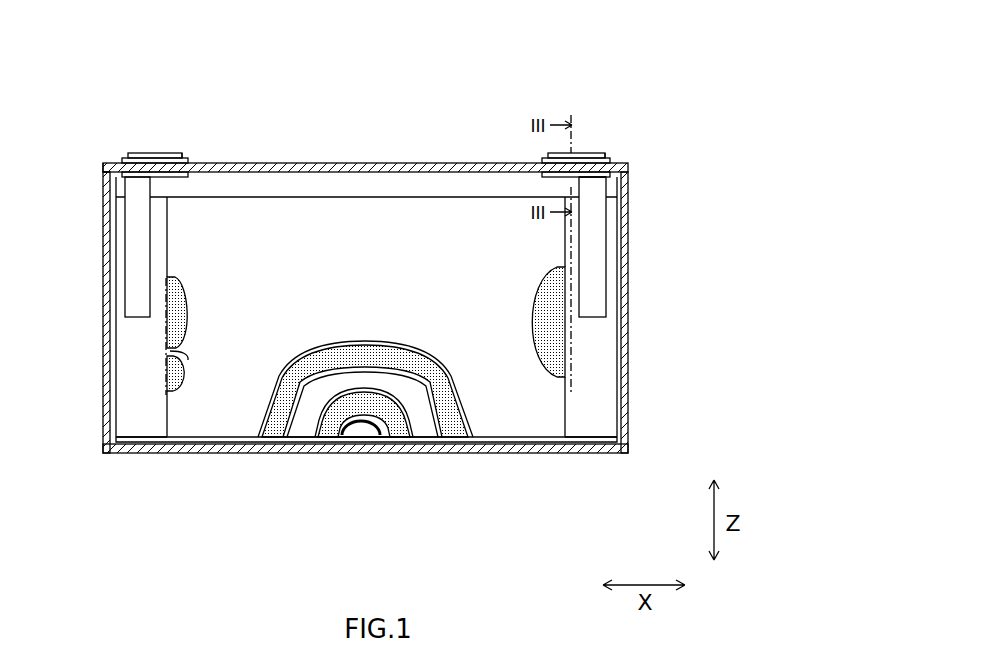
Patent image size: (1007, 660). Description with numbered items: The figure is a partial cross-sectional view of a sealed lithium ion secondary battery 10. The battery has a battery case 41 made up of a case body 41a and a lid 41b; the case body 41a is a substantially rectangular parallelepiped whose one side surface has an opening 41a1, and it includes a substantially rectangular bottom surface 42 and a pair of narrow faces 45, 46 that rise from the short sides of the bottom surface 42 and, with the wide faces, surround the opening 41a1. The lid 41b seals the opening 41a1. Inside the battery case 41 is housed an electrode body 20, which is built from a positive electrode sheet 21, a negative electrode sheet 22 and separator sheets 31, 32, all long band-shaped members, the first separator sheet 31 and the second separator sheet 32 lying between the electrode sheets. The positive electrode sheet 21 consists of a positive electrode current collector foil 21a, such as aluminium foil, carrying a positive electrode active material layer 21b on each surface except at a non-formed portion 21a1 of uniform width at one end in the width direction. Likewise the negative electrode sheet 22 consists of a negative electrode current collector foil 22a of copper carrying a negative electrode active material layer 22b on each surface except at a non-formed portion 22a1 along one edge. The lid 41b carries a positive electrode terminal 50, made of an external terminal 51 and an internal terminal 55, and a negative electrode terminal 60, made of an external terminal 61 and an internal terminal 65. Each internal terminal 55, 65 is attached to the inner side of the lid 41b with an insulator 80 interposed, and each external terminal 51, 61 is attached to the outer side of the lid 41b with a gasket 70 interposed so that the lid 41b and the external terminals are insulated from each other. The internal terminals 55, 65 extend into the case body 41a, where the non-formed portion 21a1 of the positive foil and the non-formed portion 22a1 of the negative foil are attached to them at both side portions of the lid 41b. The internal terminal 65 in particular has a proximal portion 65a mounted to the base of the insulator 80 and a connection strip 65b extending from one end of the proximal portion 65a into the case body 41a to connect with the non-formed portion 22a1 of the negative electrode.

The lithium ion secondary battery 10 is at (365, 271).
The electrode body 20 is at (294, 187).
The positive electrode sheet 21 is at (335, 436).
The positive electrode current collector foil 21a is at (152, 352).
The non-formed portion 21a1 is at (138, 425).
The positive electrode active material layer 21b is at (192, 316).
The negative electrode sheet 22 is at (279, 439).
The negative electrode current collector foil 22a is at (641, 276).
The non-formed portion 22a1 is at (600, 421).
The negative electrode active material layer 22b is at (192, 374).
The first separator sheet 31 is at (192, 350).
The second separator sheet 32 is at (365, 425).
The battery case 41 is at (365, 311).
The case body 41a is at (357, 313).
The opening 41a1 is at (107, 153).
The lid 41b is at (360, 165).
The bottom surface 42 is at (467, 453).
The narrow face 45 is at (102, 308).
The narrow face 46 is at (628, 310).
The positive electrode terminal 50 is at (164, 109).
The external terminal 51 is at (177, 153).
The internal terminal 55 is at (114, 186).
The negative electrode terminal 60 is at (622, 116).
The external terminal 61 is at (588, 153).
The internal terminal 65 is at (644, 243).
The proximal portion 65a is at (605, 182).
The connection strip 65b is at (598, 276).
The gasket 70 is at (124, 157).
The insulator 80 is at (196, 186).